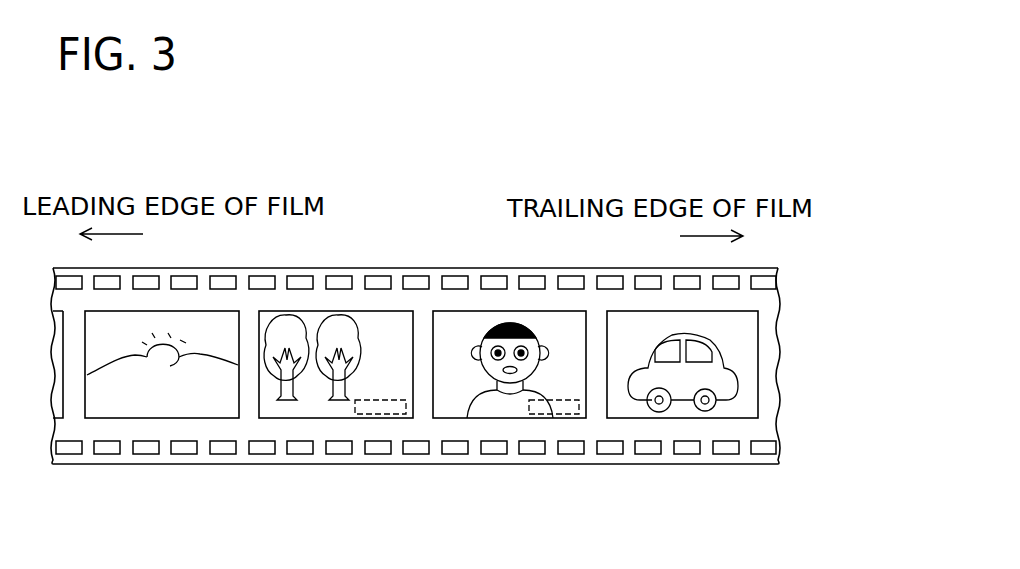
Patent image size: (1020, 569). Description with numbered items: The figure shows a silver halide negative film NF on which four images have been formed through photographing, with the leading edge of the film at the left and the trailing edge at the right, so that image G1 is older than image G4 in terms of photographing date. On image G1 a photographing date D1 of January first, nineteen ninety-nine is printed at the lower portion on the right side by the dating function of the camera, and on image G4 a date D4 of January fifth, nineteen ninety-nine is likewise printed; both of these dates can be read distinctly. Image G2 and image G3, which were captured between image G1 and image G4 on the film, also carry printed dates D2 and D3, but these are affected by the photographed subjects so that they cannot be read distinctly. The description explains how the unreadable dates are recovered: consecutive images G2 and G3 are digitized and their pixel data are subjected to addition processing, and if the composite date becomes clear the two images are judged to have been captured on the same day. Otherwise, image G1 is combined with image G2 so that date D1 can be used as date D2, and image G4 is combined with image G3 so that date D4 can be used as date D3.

The silver halide negative film NF is at (433, 268).
The image G1 is at (124, 405).
The date D1 is at (205, 410).
The image G2 is at (324, 410).
The date D2 is at (383, 414).
The image G3 is at (478, 412).
The date D3 is at (555, 414).
The image G4 is at (665, 410).
The date D4 is at (733, 414).